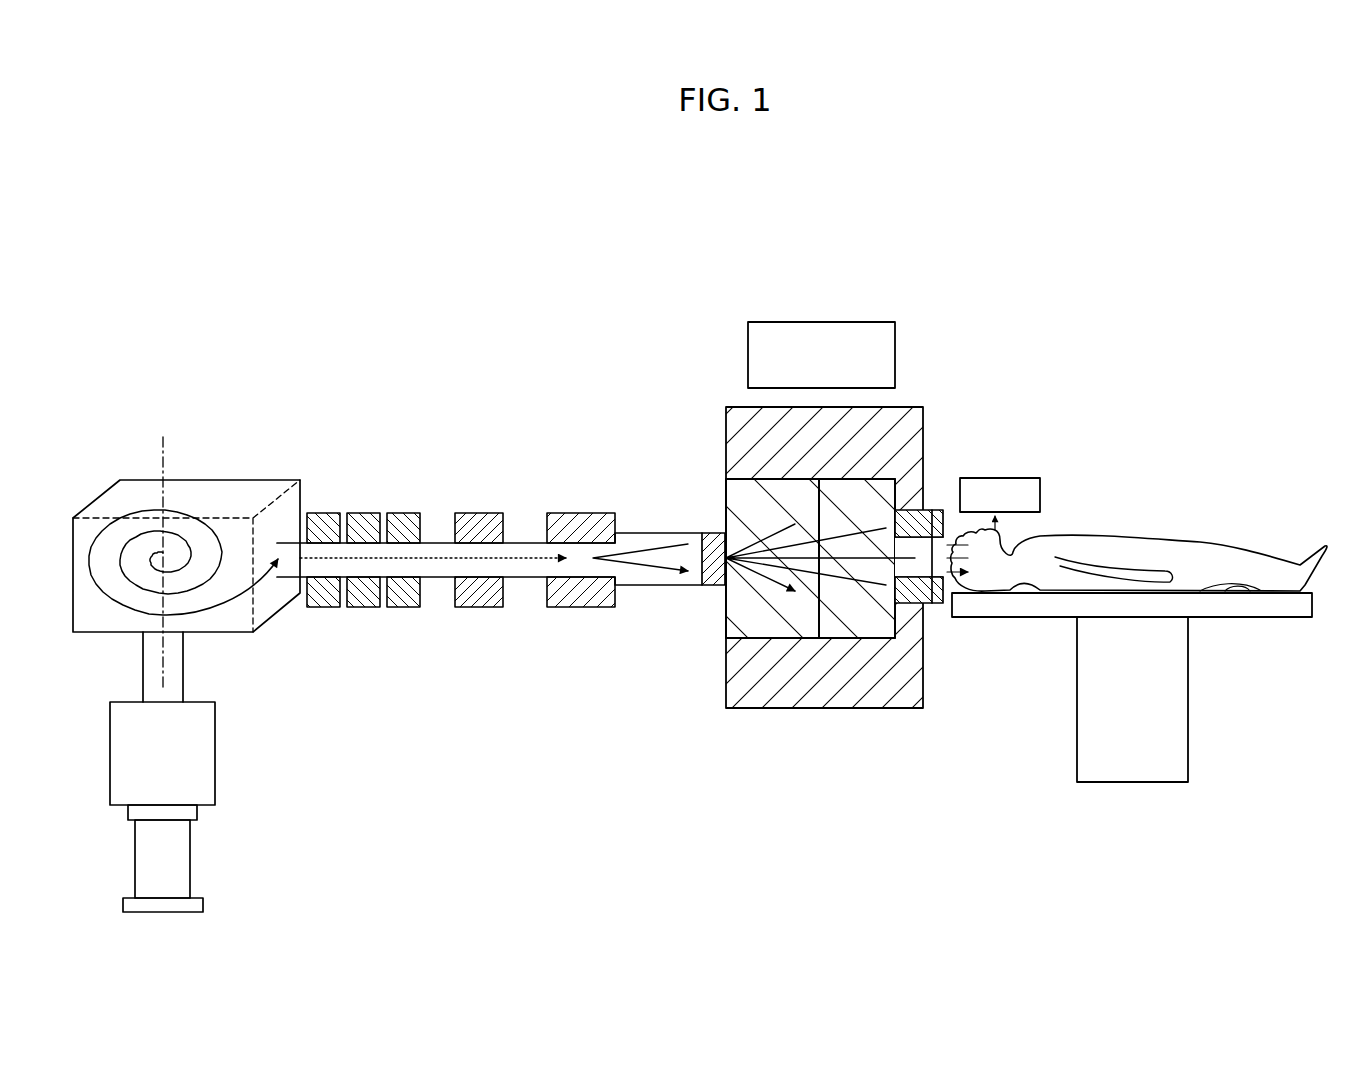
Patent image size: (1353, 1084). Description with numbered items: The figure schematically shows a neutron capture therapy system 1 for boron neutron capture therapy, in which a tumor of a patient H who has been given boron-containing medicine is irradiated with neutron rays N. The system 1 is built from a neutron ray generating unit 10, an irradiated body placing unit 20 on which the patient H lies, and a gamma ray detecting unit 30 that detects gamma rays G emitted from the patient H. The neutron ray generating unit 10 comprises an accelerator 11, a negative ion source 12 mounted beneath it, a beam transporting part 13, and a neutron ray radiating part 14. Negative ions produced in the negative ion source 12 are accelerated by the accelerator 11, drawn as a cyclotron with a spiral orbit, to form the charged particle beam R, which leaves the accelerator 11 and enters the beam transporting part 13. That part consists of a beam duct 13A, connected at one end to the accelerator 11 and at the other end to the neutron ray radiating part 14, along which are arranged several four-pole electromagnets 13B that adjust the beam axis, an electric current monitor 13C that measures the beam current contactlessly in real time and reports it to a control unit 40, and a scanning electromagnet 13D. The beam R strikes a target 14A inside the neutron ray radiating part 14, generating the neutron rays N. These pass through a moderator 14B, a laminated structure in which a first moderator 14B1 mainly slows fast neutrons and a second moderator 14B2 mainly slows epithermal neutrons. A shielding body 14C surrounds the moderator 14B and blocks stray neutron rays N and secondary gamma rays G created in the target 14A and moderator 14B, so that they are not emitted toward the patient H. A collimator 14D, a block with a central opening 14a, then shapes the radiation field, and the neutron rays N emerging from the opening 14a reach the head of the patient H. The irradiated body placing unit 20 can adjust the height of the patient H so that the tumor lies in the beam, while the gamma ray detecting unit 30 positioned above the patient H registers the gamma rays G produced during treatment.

The neutron capture therapy system 1 is at (404, 262).
The neutron ray generating unit 10 is at (545, 589).
The accelerator 11 is at (231, 491).
The negative ion source 12 is at (258, 794).
The beam transporting part 13 is at (491, 432).
The beam duct 13A is at (530, 542).
The four-pole electromagnet 13B is at (400, 519).
The electric current monitor 13C is at (471, 513).
The scanning electromagnet 13D is at (599, 520).
The neutron ray radiating part 14 is at (944, 348).
The target 14A is at (715, 533).
The moderator 14B is at (597, 322).
The first moderator 14B1 is at (757, 497).
The second moderator 14B2 is at (850, 497).
The shielding body 14C is at (750, 688).
The collimator 14D is at (930, 603).
The opening 14a is at (925, 585).
The irradiated body placing unit 20 is at (1287, 605).
The gamma ray detecting unit 30 is at (1003, 477).
The control unit 40 is at (838, 320).
The charged particle beam R is at (530, 563).
The neutron rays N is at (846, 532).
The patient H is at (1137, 557).
The gamma rays G is at (1003, 530).